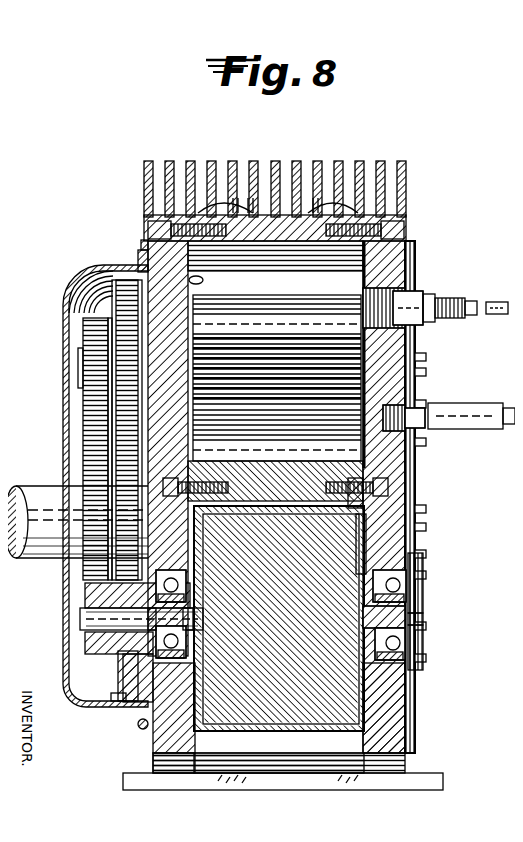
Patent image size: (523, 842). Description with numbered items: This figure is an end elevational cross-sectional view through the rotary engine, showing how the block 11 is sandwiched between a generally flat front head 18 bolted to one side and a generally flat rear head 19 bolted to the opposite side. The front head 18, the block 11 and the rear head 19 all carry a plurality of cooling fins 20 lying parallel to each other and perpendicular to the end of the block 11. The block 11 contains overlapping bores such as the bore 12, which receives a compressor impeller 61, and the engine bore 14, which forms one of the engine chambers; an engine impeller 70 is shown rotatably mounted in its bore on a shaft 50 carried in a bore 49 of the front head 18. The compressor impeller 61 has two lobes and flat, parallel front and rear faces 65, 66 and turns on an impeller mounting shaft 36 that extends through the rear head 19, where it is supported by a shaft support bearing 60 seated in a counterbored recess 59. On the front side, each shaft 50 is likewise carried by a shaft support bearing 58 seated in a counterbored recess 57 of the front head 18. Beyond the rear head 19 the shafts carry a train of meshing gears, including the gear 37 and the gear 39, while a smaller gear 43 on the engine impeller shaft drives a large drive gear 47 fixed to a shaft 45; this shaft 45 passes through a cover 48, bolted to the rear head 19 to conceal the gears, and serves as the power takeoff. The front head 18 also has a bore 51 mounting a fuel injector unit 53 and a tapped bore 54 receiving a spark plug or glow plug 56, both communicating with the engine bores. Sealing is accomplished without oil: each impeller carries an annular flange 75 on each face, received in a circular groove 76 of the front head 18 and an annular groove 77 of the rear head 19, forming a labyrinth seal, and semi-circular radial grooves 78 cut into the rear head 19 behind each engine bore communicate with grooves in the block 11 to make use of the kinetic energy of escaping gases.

The block 11 is at (398, 731).
The bore 12 is at (405, 522).
The bore 14 is at (140, 262).
The front head 18 is at (398, 705).
The rear head 19 is at (150, 738).
The cooling fins 20 is at (226, 153).
The impeller mounting shaft 36 is at (80, 626).
The gear 37 is at (115, 675).
The gear 39 is at (182, 272).
The smaller gear 43 is at (82, 322).
The shaft 45 is at (30, 486).
The large drive gear 47 is at (78, 425).
The cover 48 is at (55, 332).
The bore 49 is at (360, 631).
The shaft 50 is at (412, 624).
The bore 51 is at (410, 390).
The fuel injector unit 53 is at (470, 402).
The tapped bore 54 is at (400, 285).
The spark plug or glow plug 56 is at (420, 292).
The counterbored recess 57 is at (412, 568).
The shaft support bearing 58 is at (412, 590).
The counterbored recess 59 is at (78, 582).
The shaft support bearing 60 is at (192, 598).
The compressor impeller 61 is at (304, 722).
The front face 65 is at (375, 520).
The rear face 66 is at (133, 714).
The engine impeller 70 is at (245, 313).
The annular flange 75 is at (178, 577).
The circular groove 76 is at (355, 544).
The annular groove 77 is at (183, 643).
The radial grooves 78 is at (135, 240).